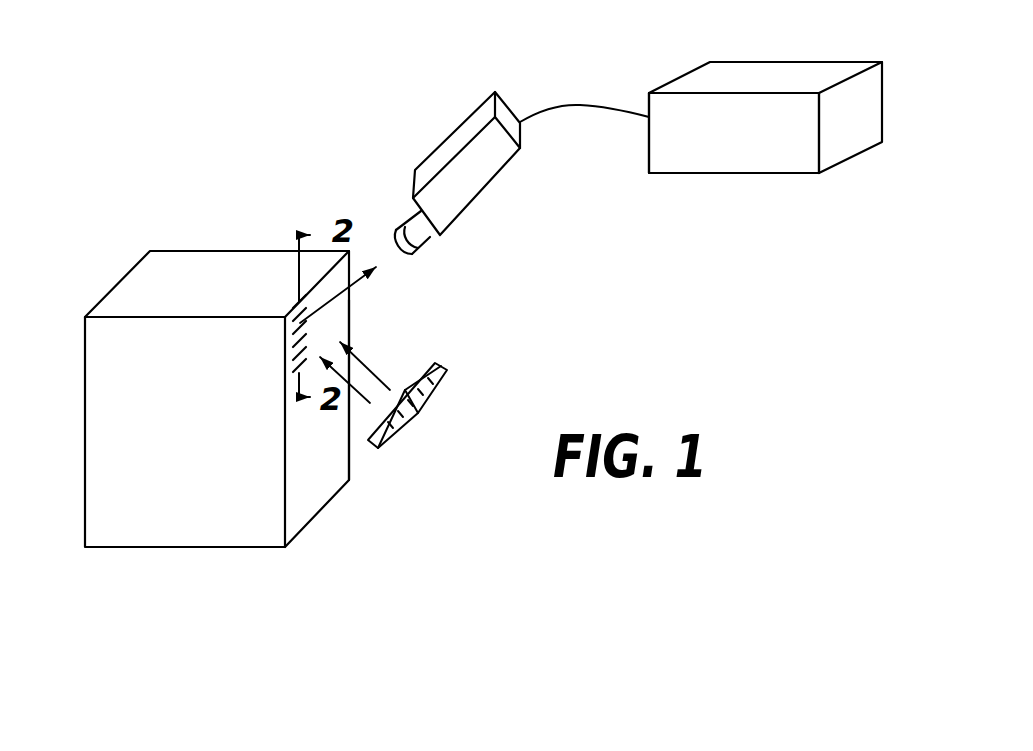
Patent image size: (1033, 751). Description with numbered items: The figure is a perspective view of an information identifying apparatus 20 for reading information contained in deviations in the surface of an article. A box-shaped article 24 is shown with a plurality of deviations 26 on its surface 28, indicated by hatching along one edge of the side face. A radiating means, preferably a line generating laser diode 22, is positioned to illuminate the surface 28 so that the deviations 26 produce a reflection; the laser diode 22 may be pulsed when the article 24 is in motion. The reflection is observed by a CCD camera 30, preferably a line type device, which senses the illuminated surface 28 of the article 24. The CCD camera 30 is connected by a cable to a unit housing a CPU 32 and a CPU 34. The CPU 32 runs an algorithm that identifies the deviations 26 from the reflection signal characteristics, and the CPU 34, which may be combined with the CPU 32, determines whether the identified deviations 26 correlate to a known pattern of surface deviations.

The information identifying apparatus 20 is at (327, 100).
The line generating laser diode 22 is at (443, 362).
The article 24 is at (228, 262).
The deviations 26 is at (298, 337).
The surface 28 is at (318, 473).
The CCD camera 30 is at (477, 178).
The CPU 32 is at (708, 77).
The CPU 34 is at (734, 133).